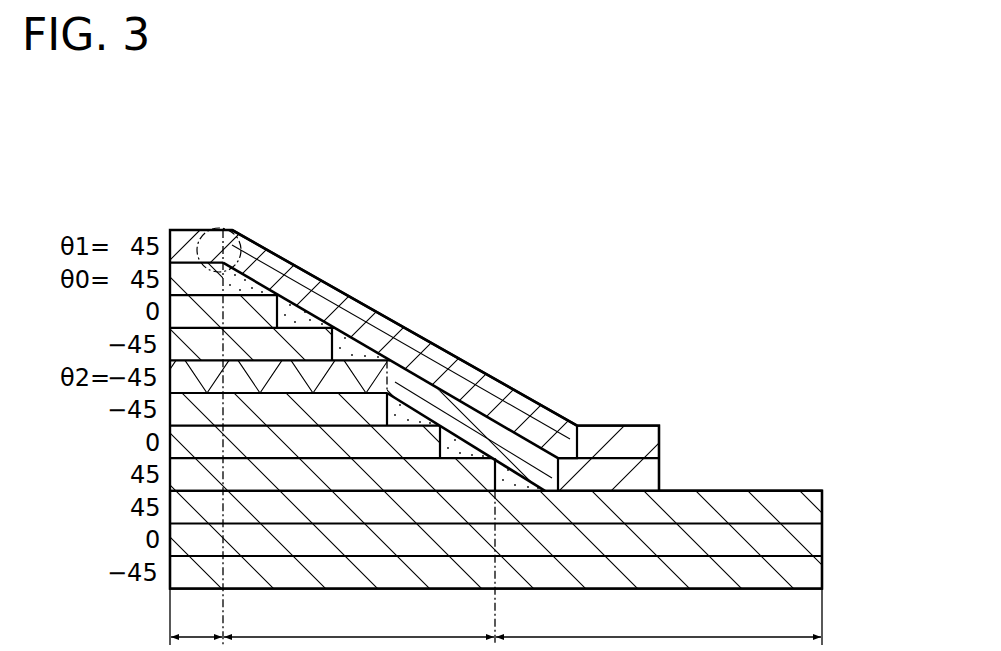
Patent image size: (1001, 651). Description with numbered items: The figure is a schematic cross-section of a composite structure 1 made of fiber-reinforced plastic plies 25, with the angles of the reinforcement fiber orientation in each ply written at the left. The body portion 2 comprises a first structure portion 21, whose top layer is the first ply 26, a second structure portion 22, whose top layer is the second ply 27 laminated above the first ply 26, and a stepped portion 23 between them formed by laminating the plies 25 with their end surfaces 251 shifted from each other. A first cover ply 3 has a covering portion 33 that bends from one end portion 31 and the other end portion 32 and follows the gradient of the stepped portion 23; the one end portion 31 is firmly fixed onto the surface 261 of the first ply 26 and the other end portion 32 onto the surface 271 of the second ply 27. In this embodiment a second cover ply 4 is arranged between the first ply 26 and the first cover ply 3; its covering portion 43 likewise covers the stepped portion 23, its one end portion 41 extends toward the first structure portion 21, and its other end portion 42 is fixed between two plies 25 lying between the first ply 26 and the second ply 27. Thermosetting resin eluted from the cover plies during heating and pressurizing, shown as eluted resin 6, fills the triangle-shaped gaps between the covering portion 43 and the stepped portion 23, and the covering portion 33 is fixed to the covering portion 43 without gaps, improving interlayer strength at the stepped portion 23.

The composite structure 1 is at (398, 138).
The body portion 2 is at (760, 484).
The first cover ply 3 is at (650, 420).
The second cover ply 4 is at (412, 388).
The eluted resin 6 is at (340, 318).
The first structure portion 21 is at (658, 624).
The second structure portion 22 is at (196, 624).
The stepped portion 23 is at (359, 624).
The plies 25 is at (823, 540).
The end surfaces 251 is at (460, 440).
The first ply 26 is at (823, 505).
The surface of first ply 261 is at (803, 490).
The second ply 27 is at (248, 262).
The surface of second ply 271 is at (222, 258).
The one end portion 31 is at (620, 437).
The other end portion 32 is at (178, 238).
The covering portion 33 is at (274, 266).
The one end portion 41 is at (651, 467).
The other end portion 42 is at (370, 344).
The covering portion 43 is at (457, 383).